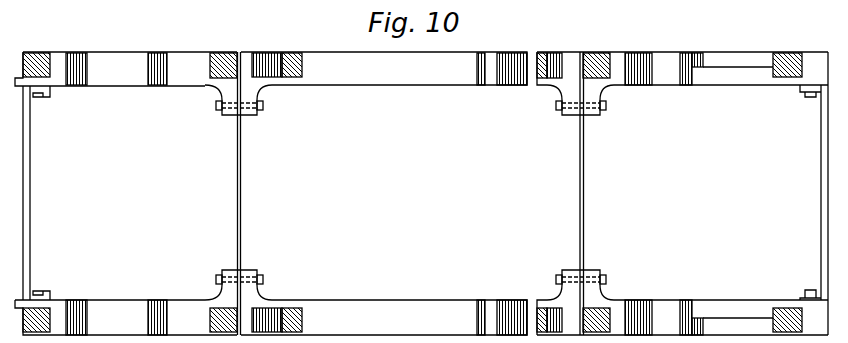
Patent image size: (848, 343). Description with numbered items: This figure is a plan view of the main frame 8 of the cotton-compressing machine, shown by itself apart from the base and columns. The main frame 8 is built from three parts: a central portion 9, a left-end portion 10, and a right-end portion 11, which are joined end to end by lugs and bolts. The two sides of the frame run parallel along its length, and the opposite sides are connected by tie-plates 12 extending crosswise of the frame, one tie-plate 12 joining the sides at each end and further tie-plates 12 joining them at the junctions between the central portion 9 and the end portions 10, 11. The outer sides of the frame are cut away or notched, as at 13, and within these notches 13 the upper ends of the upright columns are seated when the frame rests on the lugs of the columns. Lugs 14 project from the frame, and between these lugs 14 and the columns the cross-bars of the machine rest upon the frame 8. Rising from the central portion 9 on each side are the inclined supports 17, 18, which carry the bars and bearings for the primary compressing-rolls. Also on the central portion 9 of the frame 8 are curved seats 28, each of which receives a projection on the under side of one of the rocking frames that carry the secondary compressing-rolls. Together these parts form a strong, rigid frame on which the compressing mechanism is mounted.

The main frame 8 is at (370, 181).
The central portion 9 is at (384, 193).
The left-end portion 10 is at (126, 193).
The right-end portion 11 is at (682, 193).
The tie-plates 12 is at (425, 193).
The notches 13 is at (210, 62).
The lugs 14 is at (78, 53).
The inclined support 17 is at (280, 62).
The inclined support 18 is at (550, 62).
The curved seat 28 is at (512, 62).